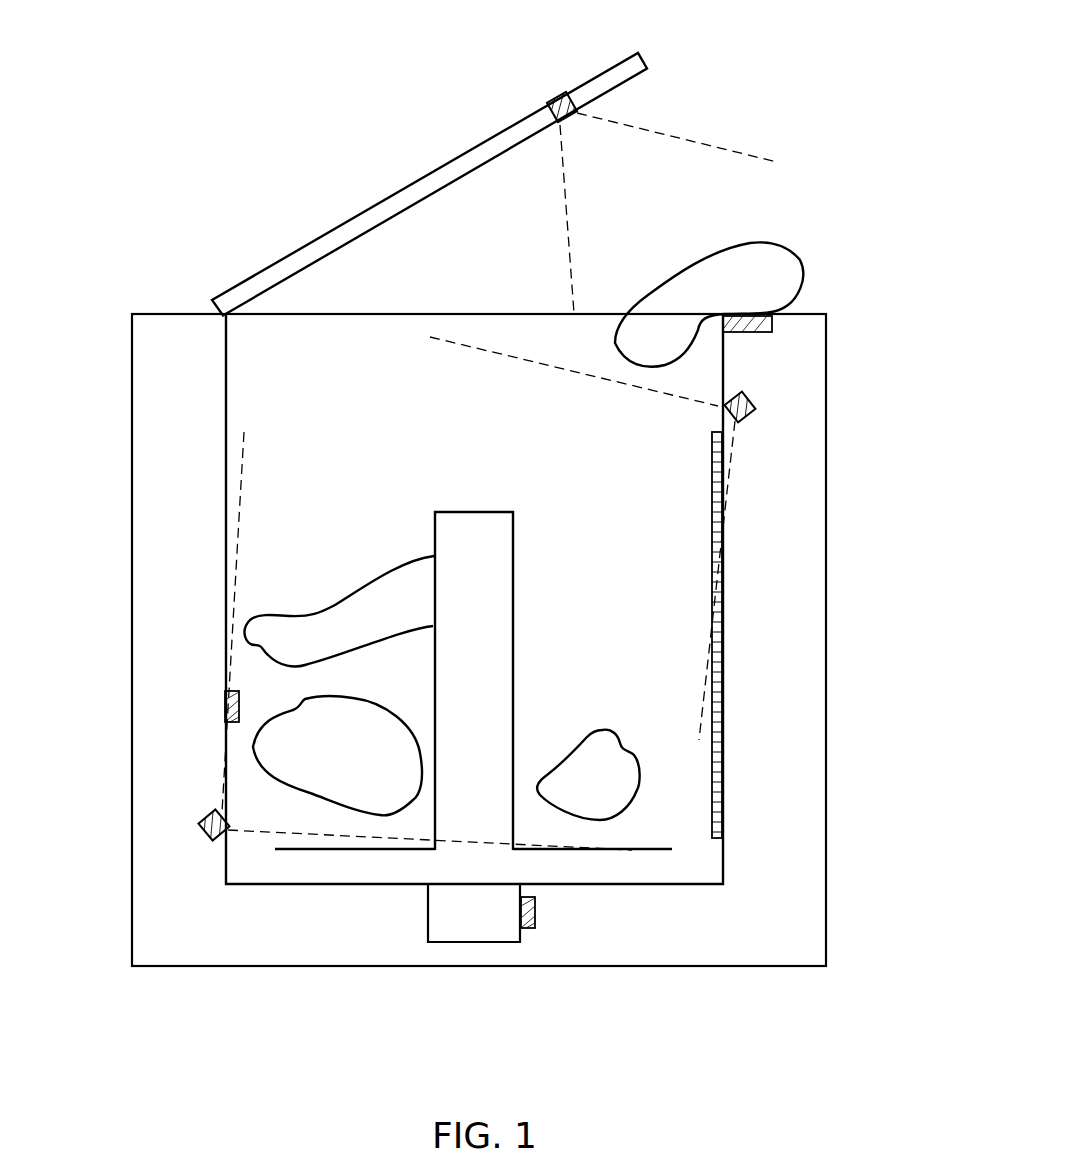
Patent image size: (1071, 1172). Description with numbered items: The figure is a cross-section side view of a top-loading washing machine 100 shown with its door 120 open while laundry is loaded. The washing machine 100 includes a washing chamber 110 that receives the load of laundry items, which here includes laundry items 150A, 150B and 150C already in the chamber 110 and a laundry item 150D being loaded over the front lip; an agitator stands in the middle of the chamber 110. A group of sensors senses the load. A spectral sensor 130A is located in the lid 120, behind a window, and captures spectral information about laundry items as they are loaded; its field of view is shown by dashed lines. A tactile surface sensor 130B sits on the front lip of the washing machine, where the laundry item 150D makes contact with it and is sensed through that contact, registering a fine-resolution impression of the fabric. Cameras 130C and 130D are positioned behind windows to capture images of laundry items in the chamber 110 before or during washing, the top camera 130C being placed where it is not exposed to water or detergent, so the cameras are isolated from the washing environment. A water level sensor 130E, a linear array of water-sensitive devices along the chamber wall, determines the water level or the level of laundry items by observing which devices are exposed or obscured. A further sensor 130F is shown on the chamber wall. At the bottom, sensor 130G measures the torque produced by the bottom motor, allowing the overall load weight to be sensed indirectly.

The washing machine 100 is at (178, 186).
The washing chamber 110 is at (351, 402).
The door 120 is at (374, 206).
The spectral sensor 130A is at (560, 93).
The tactile surface sensor 130B is at (772, 322).
The top camera 130C is at (752, 403).
The camera 130D is at (200, 826).
The water level sensor 130E is at (714, 656).
The sensor on left wall 130F is at (225, 704).
The sensor 130G is at (535, 910).
The laundry item 150A is at (337, 755).
The laundry item 150B is at (588, 775).
The laundry item 150C is at (339, 611).
The laundry item 150D is at (709, 304).